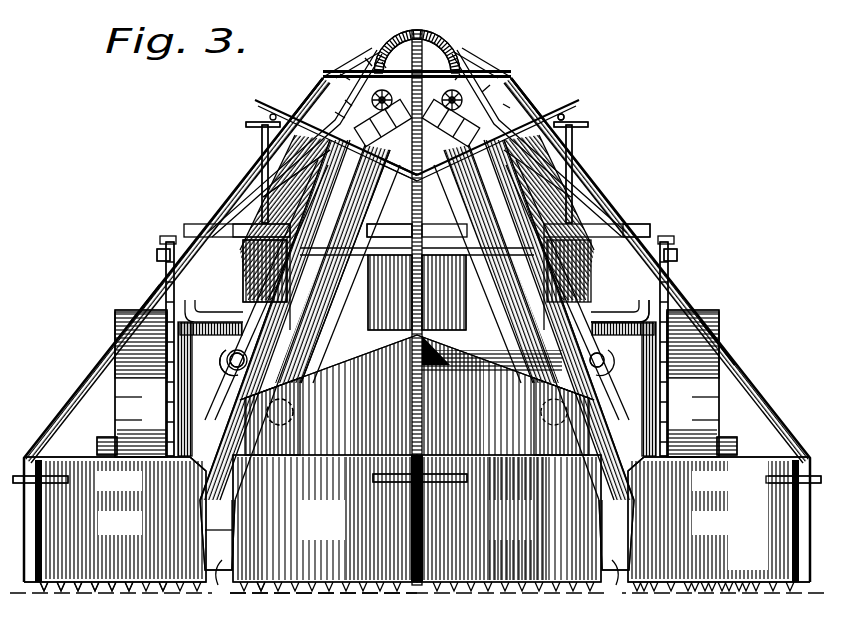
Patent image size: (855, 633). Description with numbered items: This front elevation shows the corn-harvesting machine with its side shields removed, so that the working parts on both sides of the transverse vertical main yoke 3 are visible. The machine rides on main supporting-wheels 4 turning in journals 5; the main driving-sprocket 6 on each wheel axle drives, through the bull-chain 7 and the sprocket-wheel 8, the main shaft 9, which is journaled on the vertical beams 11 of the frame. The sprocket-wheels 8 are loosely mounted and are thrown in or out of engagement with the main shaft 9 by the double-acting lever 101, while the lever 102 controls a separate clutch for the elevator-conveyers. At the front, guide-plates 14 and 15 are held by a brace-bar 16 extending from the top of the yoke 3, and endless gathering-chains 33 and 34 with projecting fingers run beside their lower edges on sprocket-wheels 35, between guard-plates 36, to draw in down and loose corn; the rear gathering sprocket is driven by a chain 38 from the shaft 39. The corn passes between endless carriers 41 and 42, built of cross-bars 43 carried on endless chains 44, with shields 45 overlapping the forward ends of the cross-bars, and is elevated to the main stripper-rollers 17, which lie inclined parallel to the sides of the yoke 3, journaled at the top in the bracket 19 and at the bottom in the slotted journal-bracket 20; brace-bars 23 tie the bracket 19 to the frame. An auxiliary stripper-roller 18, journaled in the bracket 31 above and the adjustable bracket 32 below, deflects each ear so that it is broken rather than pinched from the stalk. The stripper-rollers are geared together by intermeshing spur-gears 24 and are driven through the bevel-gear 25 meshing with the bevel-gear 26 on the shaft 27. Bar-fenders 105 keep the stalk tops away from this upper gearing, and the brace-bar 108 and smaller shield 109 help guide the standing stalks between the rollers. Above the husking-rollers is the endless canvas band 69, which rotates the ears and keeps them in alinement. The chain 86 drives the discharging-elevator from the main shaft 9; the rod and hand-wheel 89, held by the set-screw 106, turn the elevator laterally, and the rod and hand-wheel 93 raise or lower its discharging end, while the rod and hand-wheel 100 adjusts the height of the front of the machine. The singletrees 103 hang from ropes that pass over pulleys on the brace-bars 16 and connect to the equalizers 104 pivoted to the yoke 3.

The main yoke 3 is at (440, 48).
The main supporting-wheels 4 is at (417, 353).
The journals 5 is at (97, 447).
The main driving-sprocket 6 is at (162, 412).
The bull-chain 7 is at (166, 284).
The sprocket-wheel 8 is at (162, 250).
The main shaft 9 is at (612, 272).
The vertical beams 11 is at (230, 288).
The guide-plates 14 is at (417, 519).
The guide-plates 15 is at (417, 518).
The brace-bar 16 is at (668, 412).
The main stripper-rollers 17 is at (312, 226).
The auxiliary stripper-roller 18 is at (322, 298).
The bracket 19 is at (345, 100).
The journal-bracket 20 is at (238, 453).
The brace-bars 23 is at (350, 265).
The spur-gears 24 is at (412, 30).
The bevel-gear 25 is at (365, 58).
The bevel-gear 26 is at (382, 62).
The shaft 27 is at (500, 64).
The bracket 31 is at (270, 120).
The adjustable bracket 32 is at (306, 345).
The endless gathering-chain 33 is at (110, 590).
The endless gathering-chain 34 is at (316, 588).
The sprocket-wheels 35 is at (608, 588).
The guard-plates 36 is at (640, 480).
The chain 38 is at (230, 356).
The shaft 39 is at (236, 365).
The endless carrier 41 is at (238, 512).
The endless carrier 42 is at (203, 466).
The cross-bars 43 is at (228, 530).
The endless chains 44 is at (222, 586).
The shields 45 is at (200, 511).
The endless band 69 is at (352, 266).
The chain 86 is at (232, 342).
The rod and hand-wheel 89 is at (566, 116).
The rod and hand-wheel 93 is at (419, 190).
The rod and hand-wheel 100 is at (262, 140).
The double-acting lever 101 is at (421, 212).
The lever 102 is at (262, 180).
The singletrees 103 is at (68, 480).
The equalizers 104 is at (340, 74).
The bar-fenders 105 is at (335, 112).
The set-screw 106 is at (574, 150).
The brace-bar 108 is at (152, 300).
The smaller shield 109 is at (417, 416).